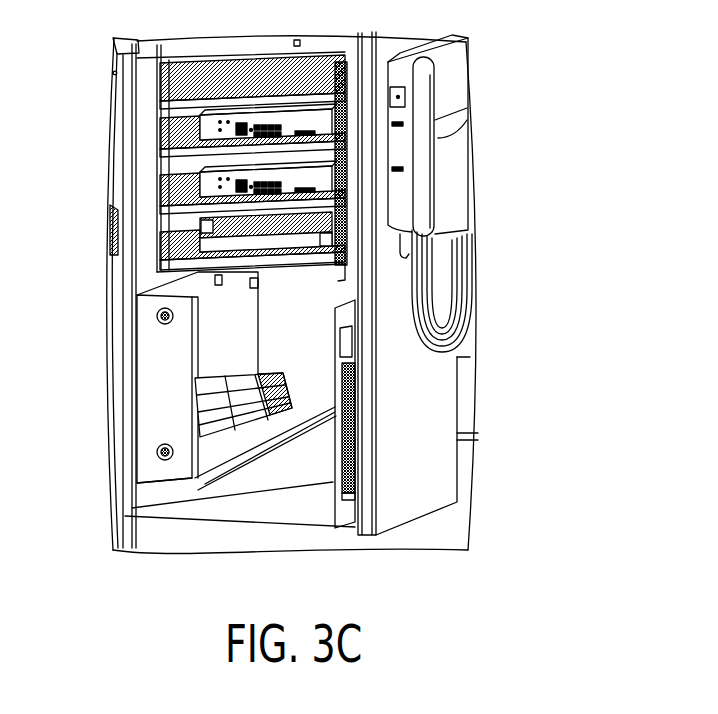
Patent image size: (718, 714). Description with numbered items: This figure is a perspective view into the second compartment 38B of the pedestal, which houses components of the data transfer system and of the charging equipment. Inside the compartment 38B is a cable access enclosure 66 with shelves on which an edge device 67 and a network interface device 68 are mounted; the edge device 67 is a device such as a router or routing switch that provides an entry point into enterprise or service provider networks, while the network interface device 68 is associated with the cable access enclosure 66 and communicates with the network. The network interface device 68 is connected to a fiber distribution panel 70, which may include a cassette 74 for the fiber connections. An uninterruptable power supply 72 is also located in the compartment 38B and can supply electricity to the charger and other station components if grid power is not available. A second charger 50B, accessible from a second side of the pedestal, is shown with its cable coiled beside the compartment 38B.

The cable access enclosure 66 is at (188, 122).
The edge device 67 is at (198, 130).
The network interface device 68 is at (195, 221).
The fiber distribution panel 70 is at (168, 392).
The uninterruptable power supply 72 is at (346, 494).
The cassette 74 is at (197, 420).
The compartment 38B is at (288, 511).
The second charger 50B is at (465, 58).